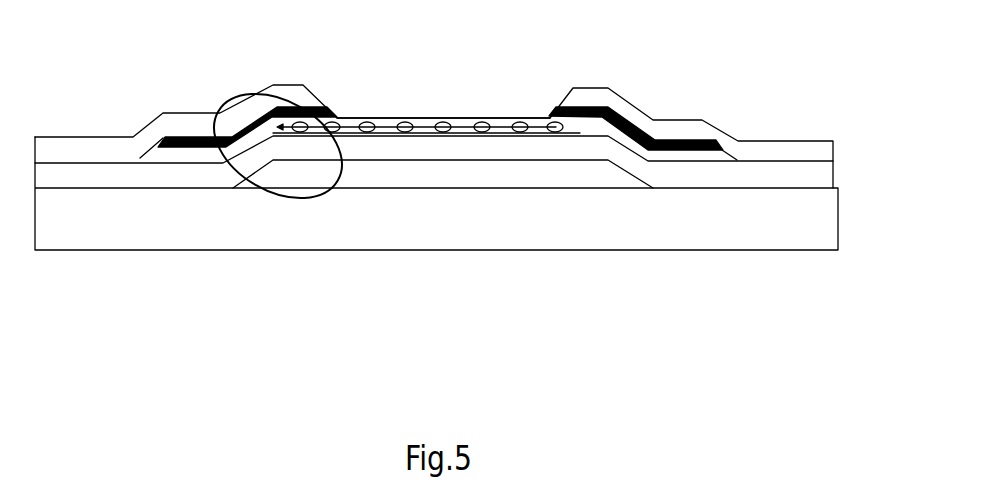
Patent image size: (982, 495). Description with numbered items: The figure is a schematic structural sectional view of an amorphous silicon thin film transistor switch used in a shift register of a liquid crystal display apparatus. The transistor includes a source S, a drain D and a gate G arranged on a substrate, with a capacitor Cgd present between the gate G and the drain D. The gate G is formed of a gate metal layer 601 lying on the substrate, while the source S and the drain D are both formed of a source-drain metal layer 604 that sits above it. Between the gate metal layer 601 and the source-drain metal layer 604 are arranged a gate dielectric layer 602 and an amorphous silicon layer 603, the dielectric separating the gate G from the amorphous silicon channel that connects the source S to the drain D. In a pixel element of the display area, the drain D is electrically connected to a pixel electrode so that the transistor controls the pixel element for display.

The gate metal layer 601 is at (569, 173).
The gate dielectric layer 602 is at (667, 173).
The amorphous silicon layer 603 is at (716, 152).
The source-drain metal layer 604 is at (672, 125).
The gate G is at (435, 176).
The drain D is at (160, 122).
The source S is at (692, 126).
The capacitor Cgd is at (248, 104).